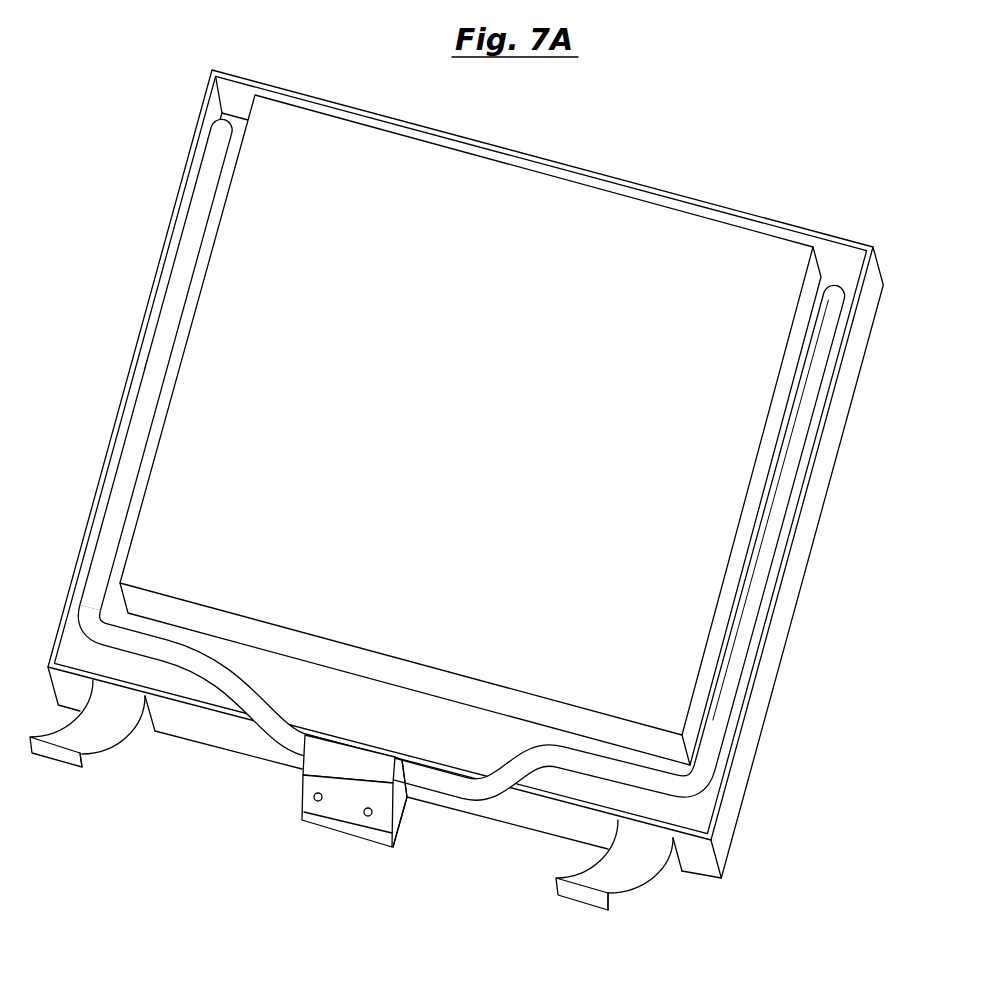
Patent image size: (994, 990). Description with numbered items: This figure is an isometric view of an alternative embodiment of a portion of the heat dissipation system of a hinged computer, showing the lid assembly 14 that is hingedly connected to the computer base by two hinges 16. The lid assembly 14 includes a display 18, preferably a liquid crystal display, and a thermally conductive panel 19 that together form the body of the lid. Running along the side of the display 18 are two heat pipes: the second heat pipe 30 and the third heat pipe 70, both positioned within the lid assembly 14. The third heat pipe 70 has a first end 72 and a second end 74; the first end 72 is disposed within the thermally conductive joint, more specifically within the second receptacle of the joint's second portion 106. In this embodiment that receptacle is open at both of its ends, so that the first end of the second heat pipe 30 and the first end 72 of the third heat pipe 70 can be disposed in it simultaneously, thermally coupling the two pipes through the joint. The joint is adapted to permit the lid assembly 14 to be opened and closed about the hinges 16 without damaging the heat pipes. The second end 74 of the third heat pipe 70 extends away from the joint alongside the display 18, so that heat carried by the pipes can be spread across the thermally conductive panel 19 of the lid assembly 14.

The lid assembly 14 is at (675, 156).
The hinges 16 is at (113, 748).
The display 18 is at (494, 352).
The thermally conductive panel 19 is at (693, 827).
The second heat pipe 30 is at (496, 792).
The third heat pipe 70 is at (167, 653).
The first end 72 is at (305, 737).
The second end 74 is at (212, 143).
The second portion 106 is at (405, 810).